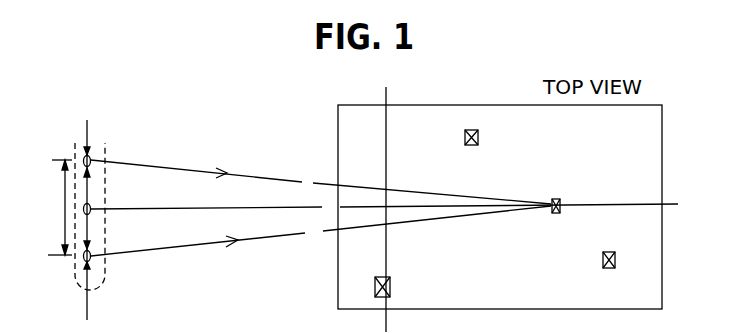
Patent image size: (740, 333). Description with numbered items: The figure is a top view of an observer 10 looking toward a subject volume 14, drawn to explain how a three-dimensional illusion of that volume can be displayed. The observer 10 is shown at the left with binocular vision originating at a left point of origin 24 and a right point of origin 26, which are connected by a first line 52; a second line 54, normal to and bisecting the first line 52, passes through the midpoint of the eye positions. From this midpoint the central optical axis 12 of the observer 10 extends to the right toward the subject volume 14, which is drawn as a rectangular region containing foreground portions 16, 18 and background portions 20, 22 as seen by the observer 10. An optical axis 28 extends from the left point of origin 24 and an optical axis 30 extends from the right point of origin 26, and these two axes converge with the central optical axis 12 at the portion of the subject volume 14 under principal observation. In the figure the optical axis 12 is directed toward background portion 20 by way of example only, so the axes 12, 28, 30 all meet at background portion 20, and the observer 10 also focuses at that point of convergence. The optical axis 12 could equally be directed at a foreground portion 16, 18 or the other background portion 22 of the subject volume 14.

The observer 10 is at (103, 145).
The optical axis 12 is at (200, 208).
The subject volume 14 is at (410, 105).
The foreground portion 16 is at (390, 287).
The foreground portion 18 is at (478, 137).
The background portion 20 is at (560, 210).
The background portion 22 is at (615, 262).
The left point of origin 24 is at (92, 155).
The right point of origin 26 is at (90, 260).
The optical axis 28 is at (173, 167).
The optical axis 30 is at (182, 245).
The first line 52 is at (85, 190).
The second line 54 is at (92, 208).